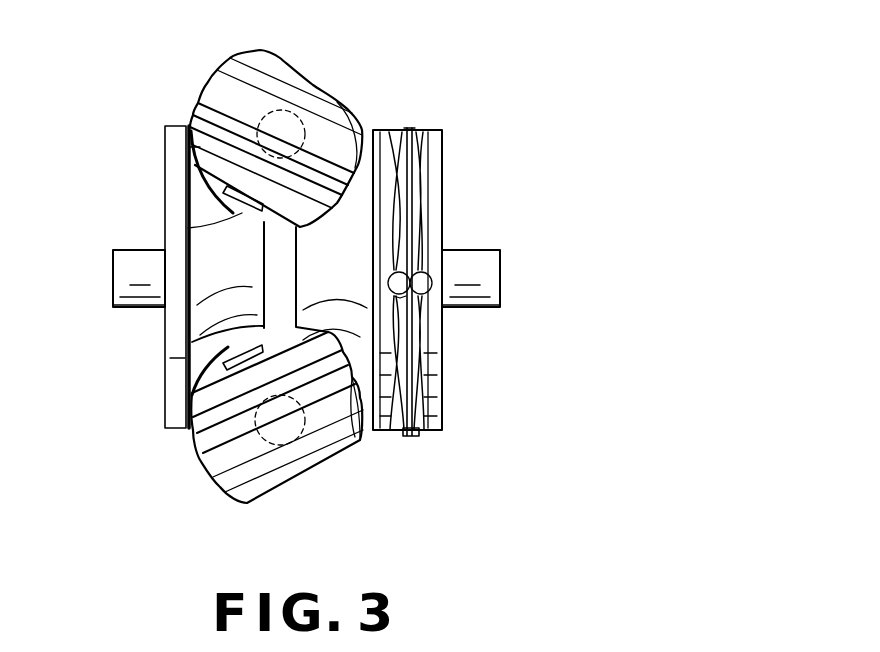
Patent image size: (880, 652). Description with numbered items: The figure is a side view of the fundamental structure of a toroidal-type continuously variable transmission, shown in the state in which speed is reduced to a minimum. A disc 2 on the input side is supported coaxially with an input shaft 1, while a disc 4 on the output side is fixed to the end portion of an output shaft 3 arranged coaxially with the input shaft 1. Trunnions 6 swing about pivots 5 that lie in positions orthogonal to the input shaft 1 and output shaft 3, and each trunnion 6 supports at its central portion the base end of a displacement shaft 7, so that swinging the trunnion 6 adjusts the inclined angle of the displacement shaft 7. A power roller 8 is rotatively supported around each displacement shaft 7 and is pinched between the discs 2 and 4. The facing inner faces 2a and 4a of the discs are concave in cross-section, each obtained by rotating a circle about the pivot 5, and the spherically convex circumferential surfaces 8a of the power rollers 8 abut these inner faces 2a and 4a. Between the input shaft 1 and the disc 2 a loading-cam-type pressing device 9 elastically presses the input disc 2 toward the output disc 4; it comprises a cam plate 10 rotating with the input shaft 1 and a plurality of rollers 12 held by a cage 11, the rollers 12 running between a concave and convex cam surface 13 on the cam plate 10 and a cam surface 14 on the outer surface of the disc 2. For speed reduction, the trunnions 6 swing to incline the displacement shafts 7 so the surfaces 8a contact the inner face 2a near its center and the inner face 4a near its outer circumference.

The input shaft 1 is at (488, 270).
The disc on the input side 2 is at (383, 137).
The inner face of the disc on the input side 2a is at (357, 443).
The output shaft 3 is at (128, 270).
The disc on the output side 4 is at (172, 200).
The inner face of the disc on the output side 4a is at (188, 228).
The pivot 5 is at (283, 110).
The trunnion 6 is at (228, 75).
The displacement shaft 7 is at (224, 190).
The power roller 8 is at (188, 123).
The circumferential surface of the power roller 8a is at (190, 130).
The pressing device 9 is at (428, 117).
The cam plate 10 is at (432, 147).
The cage 11 is at (409, 128).
The roller 12 is at (402, 132).
The cam surface 13 is at (412, 217).
The cam surface 14 is at (400, 298).